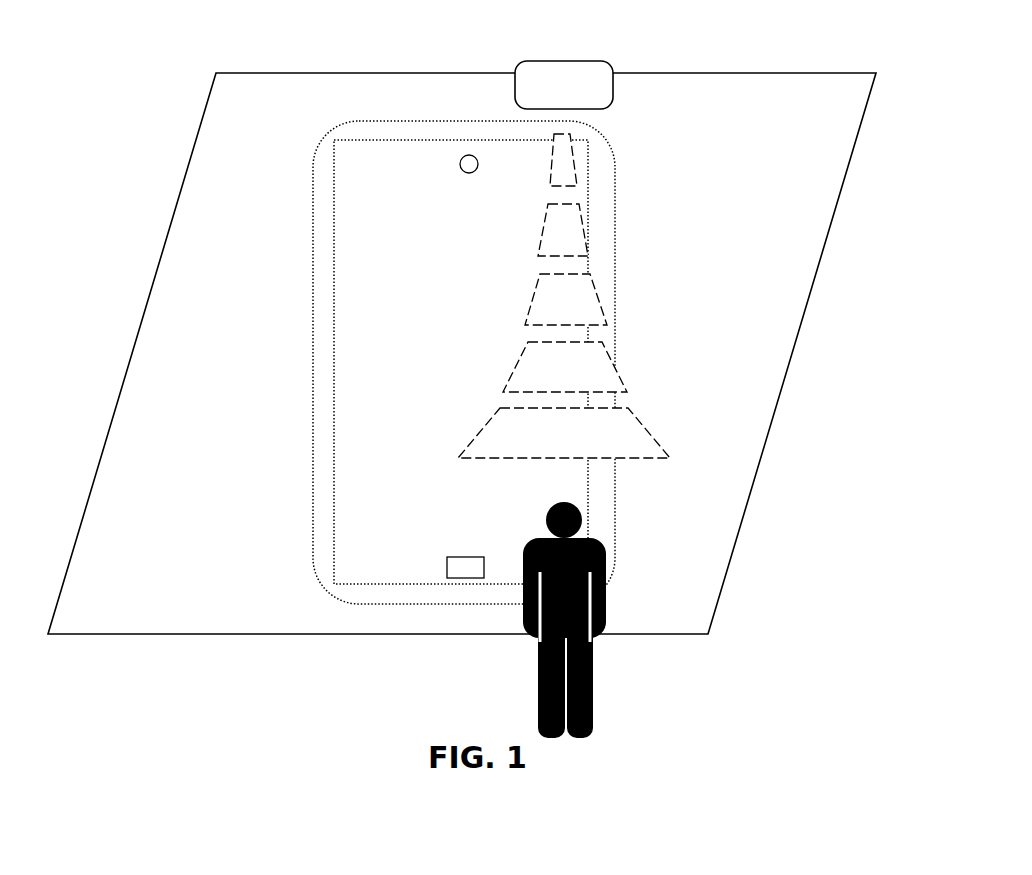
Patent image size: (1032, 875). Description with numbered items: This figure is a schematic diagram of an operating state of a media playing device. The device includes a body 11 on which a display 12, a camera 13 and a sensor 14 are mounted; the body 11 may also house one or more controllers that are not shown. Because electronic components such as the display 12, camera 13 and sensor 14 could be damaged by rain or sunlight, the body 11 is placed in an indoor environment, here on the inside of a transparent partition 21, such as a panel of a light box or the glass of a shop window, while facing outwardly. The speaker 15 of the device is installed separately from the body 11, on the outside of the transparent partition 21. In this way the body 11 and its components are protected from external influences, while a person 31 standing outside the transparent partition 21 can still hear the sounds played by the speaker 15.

The body 11 is at (313, 435).
The display 12 is at (378, 302).
The camera 13 is at (460, 164).
The sensor 14 is at (447, 567).
The speaker 15 is at (610, 63).
The transparent partition 21 is at (746, 408).
The person 31 is at (590, 691).